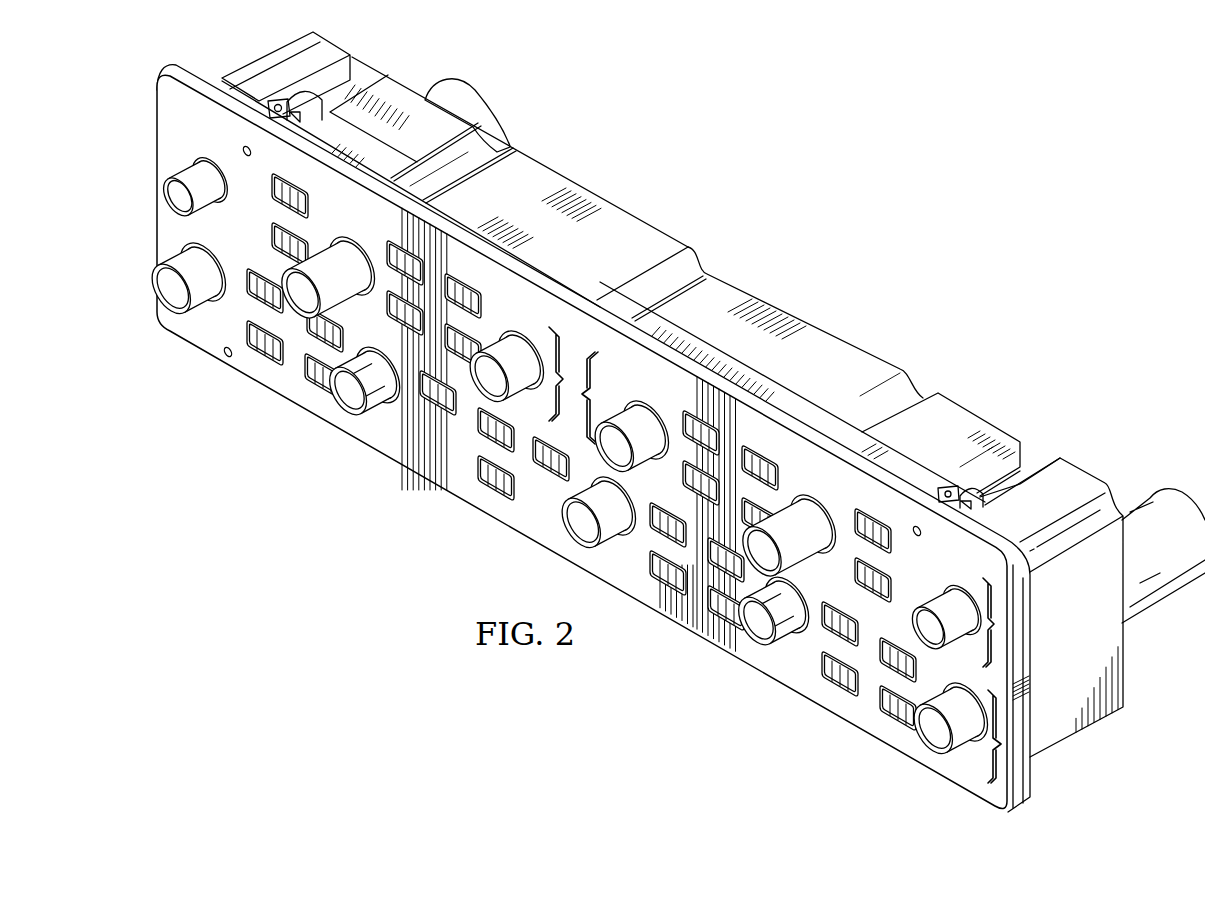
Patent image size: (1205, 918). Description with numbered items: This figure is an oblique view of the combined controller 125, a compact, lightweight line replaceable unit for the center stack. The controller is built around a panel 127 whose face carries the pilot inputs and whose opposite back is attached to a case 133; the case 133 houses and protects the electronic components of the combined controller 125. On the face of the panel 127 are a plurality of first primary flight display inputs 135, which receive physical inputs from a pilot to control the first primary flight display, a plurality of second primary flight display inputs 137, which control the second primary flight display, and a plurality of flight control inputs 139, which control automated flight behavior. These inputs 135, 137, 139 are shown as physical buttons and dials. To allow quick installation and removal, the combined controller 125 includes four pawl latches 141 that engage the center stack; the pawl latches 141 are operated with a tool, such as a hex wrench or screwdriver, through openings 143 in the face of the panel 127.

The combined controller 125 is at (818, 268).
The panel 127 is at (695, 354).
The case 133 is at (637, 232).
The first primary flight display inputs 135 is at (155, 189).
The second primary flight display inputs 137 is at (988, 626).
The flight control inputs 139 is at (155, 296).
The pawl latches 141 is at (328, 110).
The openings 143 is at (245, 148).